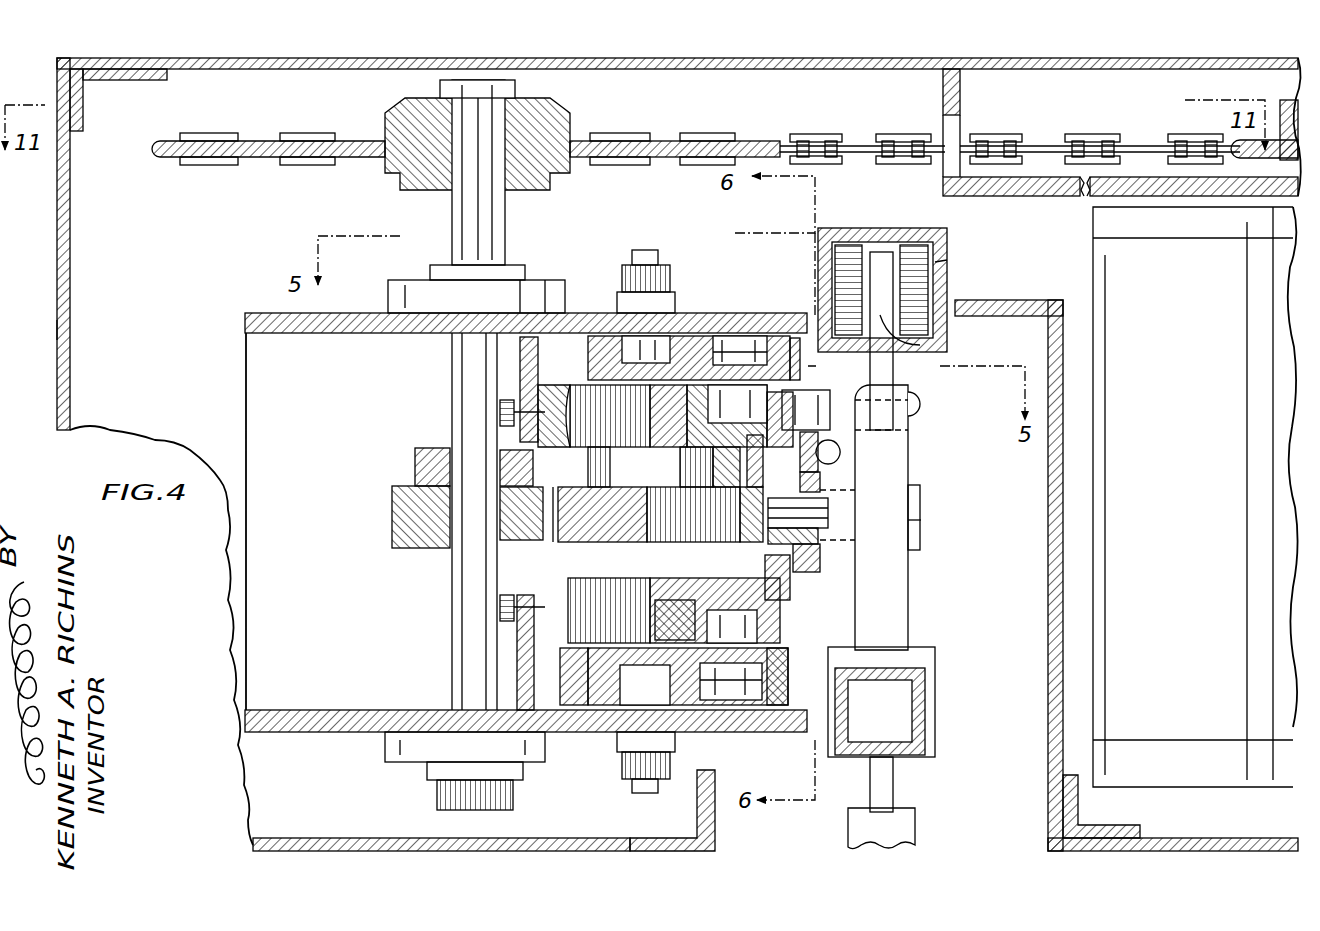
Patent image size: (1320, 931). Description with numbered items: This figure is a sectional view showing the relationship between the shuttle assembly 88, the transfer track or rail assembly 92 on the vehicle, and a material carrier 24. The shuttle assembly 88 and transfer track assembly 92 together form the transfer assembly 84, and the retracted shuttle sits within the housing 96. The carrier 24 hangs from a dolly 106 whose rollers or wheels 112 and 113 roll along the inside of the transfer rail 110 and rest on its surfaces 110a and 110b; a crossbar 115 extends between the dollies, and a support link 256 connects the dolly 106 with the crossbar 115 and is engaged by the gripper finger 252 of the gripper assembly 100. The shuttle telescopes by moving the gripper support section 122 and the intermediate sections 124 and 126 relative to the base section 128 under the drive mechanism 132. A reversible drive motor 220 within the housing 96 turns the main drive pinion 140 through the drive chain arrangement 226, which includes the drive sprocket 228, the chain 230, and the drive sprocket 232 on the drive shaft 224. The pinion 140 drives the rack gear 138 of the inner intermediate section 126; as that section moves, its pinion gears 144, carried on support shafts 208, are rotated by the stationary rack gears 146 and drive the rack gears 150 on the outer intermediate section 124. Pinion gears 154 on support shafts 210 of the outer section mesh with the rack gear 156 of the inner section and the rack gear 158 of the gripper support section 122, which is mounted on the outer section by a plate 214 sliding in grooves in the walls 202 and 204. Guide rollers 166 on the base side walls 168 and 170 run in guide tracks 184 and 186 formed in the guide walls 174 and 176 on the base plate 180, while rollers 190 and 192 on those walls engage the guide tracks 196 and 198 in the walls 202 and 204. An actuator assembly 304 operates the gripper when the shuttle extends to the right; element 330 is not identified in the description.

The carrier 24 is at (925, 827).
The transfer assembly 84 is at (1285, 30).
The shuttle assembly 88 is at (748, 146).
The transfer track or rail assembly 92 is at (890, 228).
The housing 96 is at (57, 322).
The gripper assembly 100 is at (924, 520).
The dolly 106 is at (912, 444).
The transfer rail 110 is at (944, 254).
The surface of the transfer rail 110a is at (920, 345).
The surface of the transfer rail 110b is at (952, 322).
The roller or wheel 112 is at (848, 262).
The roller or wheel 113 is at (918, 288).
The crossbar 115 is at (914, 710).
The gripper support section 122 is at (820, 566).
The outer or second intermediate section 124 is at (684, 633).
The inner or first intermediate section 126 is at (682, 713).
The base section 128 is at (515, 672).
The drive mechanism 132 is at (295, 438).
The rack gear 138 is at (498, 467).
The main drive pinion 140 is at (413, 517).
The pinion gear 144 is at (514, 412).
The stationary rack gear 146 is at (505, 404).
The rack gear 150 is at (681, 479).
The pinion gear 154 is at (816, 512).
The rack gear 156 is at (647, 518).
The rack gear 158 is at (806, 538).
The guide roller 166 is at (668, 352).
The side wall 168 is at (246, 325).
The side wall 170 is at (285, 692).
The guide wall 174 is at (792, 329).
The guide wall 176 is at (778, 702).
The base plate 180 is at (600, 704).
The guide track 184 is at (626, 366).
The guide track 186 is at (688, 675).
The roller 190 is at (758, 338).
The roller 192 is at (764, 676).
The guide track 196 is at (810, 398).
The guide track 198 is at (752, 630).
The wall 202 is at (700, 380).
The wall 204 is at (693, 612).
The support shaft 208 is at (594, 560).
The support shaft 210 is at (770, 570).
The plate 214 is at (814, 561).
The drive motor 220 is at (1258, 540).
The drive shaft 224 is at (452, 341).
The drive chain arrangement 226 is at (1053, 133).
The drive sprocket 228 is at (1270, 130).
The chain 230 is at (905, 108).
The drive sprocket 232 is at (570, 138).
The gripper finger 252 is at (920, 492).
The support link 256 is at (907, 618).
The actuator assembly 304 is at (846, 442).
The washer 330 is at (820, 478).